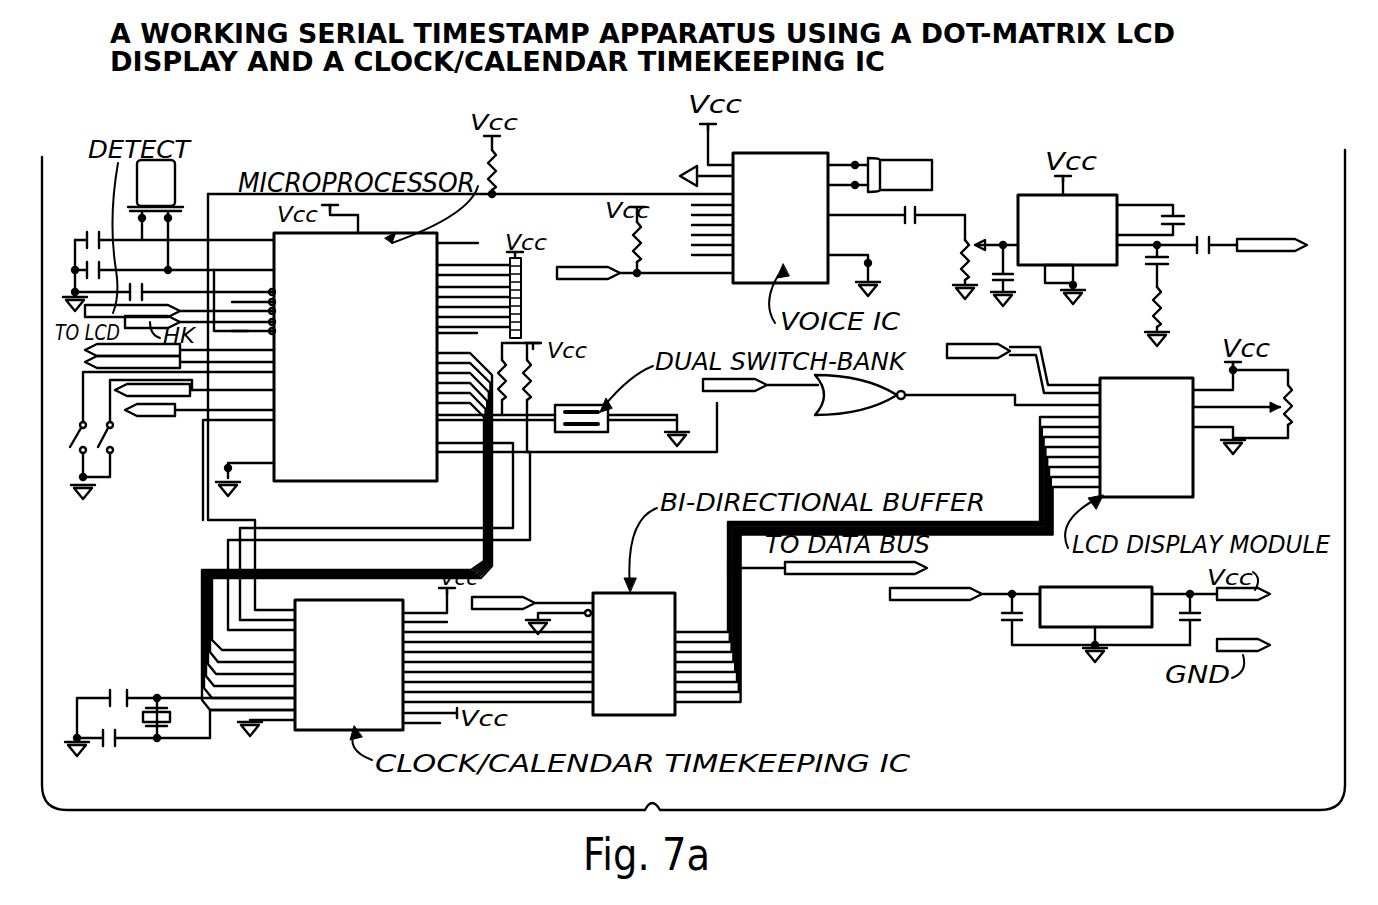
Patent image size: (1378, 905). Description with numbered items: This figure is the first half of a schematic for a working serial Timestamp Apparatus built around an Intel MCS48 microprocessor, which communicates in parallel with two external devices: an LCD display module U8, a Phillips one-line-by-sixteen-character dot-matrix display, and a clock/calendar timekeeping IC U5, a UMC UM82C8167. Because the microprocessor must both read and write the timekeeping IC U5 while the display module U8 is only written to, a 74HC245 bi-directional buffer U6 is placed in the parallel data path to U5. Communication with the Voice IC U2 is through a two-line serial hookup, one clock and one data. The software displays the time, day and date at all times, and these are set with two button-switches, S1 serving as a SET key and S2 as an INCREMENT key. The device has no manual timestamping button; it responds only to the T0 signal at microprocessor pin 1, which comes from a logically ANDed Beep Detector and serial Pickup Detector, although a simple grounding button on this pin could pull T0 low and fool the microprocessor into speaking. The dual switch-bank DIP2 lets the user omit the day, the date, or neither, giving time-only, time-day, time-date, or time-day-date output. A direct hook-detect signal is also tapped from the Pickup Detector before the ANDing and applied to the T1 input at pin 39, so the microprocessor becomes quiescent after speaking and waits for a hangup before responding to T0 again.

The Voice IC U2 is at (807, 232).
The clock/calendar timekeeping IC U5 is at (371, 697).
The bi-directional buffer U6 is at (657, 676).
The LCD display module U8 is at (1170, 456).
The SET key button-switch S1 is at (72, 428).
The INCREMENT key button-switch S2 is at (103, 445).
The dual switch-bank DIP2 is at (583, 388).
The T0 input T0 is at (216, 290).
The T1 input T1 is at (222, 322).
The microprocessor pin 1 is at (272, 313).
The microprocessor pin 39 is at (272, 322).